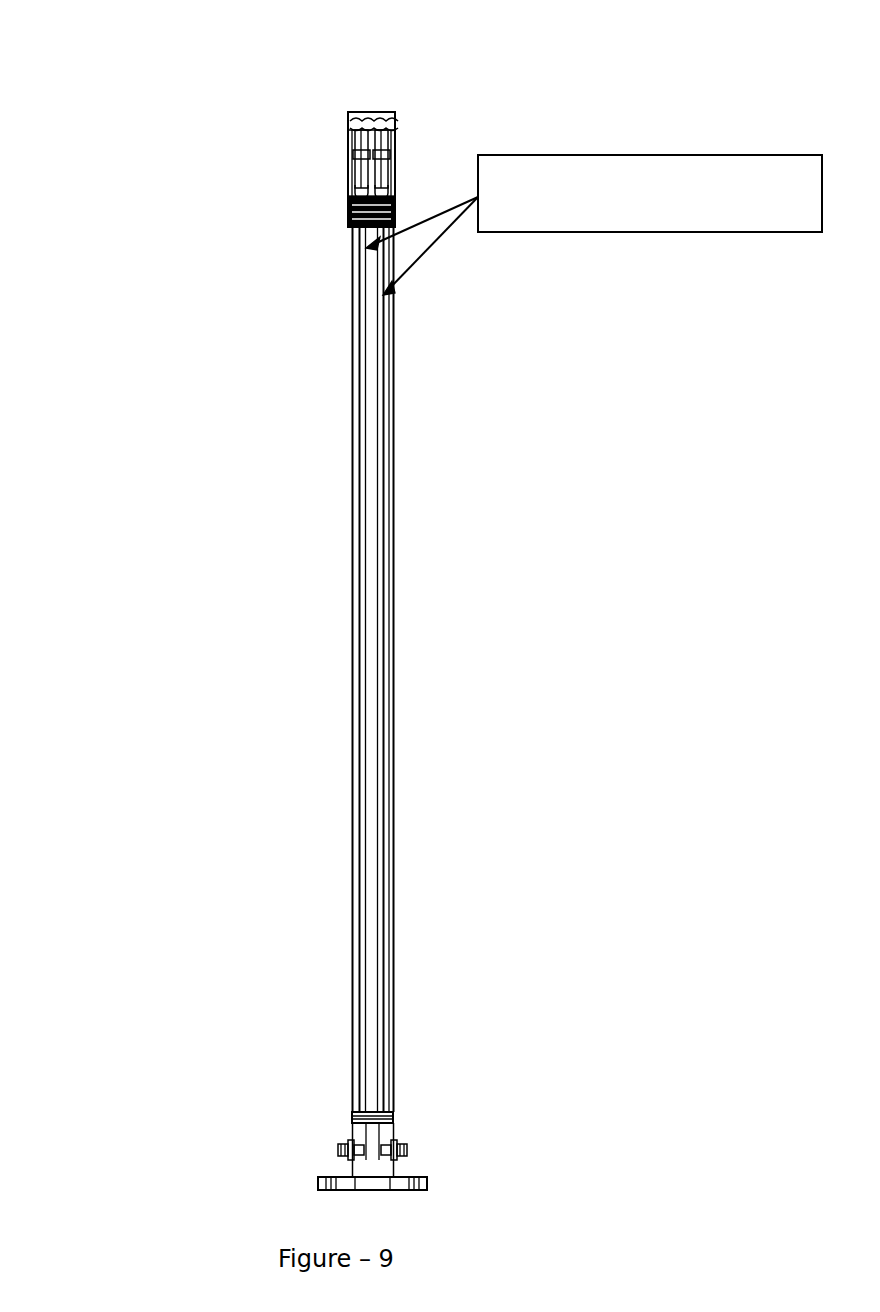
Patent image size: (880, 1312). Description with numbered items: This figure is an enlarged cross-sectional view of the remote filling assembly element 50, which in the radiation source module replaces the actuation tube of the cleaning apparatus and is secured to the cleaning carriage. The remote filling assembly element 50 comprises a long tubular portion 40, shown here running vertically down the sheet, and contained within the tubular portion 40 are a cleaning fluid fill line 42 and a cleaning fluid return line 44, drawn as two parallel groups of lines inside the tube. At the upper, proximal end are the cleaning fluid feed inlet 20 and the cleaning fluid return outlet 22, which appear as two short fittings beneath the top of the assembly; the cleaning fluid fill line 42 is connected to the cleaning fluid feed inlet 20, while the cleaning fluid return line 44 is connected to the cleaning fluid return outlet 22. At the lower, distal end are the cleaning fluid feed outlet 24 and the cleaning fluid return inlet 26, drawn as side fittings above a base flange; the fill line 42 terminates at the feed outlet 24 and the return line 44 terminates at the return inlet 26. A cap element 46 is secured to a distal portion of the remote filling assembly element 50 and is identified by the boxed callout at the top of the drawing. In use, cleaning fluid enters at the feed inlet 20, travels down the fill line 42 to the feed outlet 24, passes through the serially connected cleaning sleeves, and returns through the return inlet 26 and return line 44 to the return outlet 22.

The cleaning fluid feed inlet 20 is at (356, 170).
The cleaning fluid return outlet 22 is at (388, 168).
The cleaning fluid feed outlet 24 is at (342, 1150).
The cleaning fluid return inlet 26 is at (402, 1148).
The tubular portion 40 is at (352, 425).
The cleaning fluid fill line 42 is at (358, 556).
The cleaning fluid return line 44 is at (387, 558).
The cap element 46 is at (364, 112).
The remote filling assembly element 50 is at (176, 466).